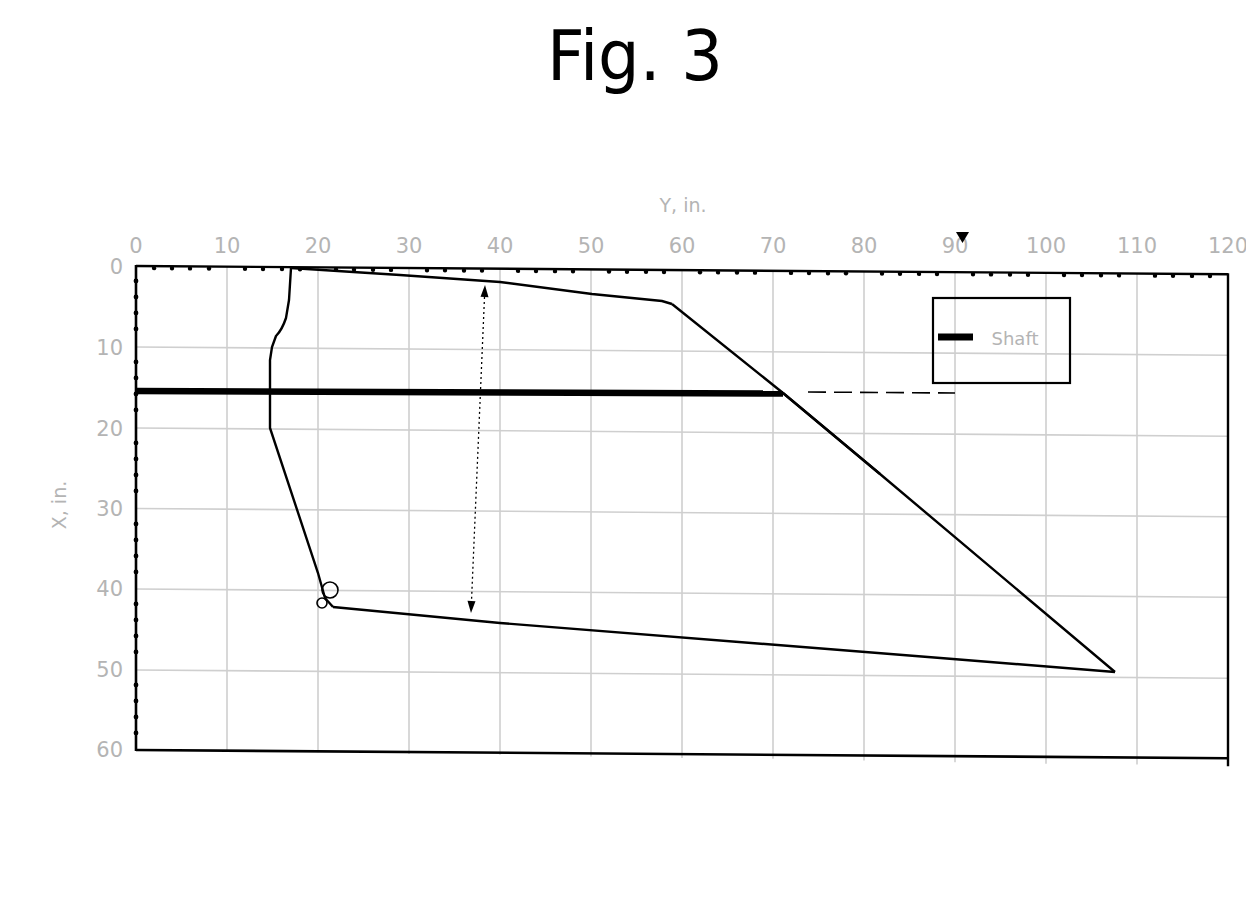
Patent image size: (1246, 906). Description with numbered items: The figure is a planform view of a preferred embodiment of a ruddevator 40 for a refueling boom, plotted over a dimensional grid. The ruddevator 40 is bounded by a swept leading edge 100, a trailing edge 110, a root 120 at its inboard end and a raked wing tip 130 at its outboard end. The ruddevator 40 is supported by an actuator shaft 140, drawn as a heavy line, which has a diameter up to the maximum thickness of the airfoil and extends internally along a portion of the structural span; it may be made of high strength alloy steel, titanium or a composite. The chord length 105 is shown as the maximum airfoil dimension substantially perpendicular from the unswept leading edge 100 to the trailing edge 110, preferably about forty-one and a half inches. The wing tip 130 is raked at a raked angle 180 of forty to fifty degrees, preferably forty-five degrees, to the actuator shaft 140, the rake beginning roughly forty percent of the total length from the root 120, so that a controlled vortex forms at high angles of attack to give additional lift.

The ruddevator 40 is at (659, 474).
The leading edge 100 is at (538, 270).
The chord length 105 is at (478, 428).
The trailing edge 110 is at (532, 644).
The root 120 is at (265, 316).
The wing tip 130 is at (983, 495).
The actuator shaft 140 is at (196, 363).
The raked angle 180 is at (877, 443).